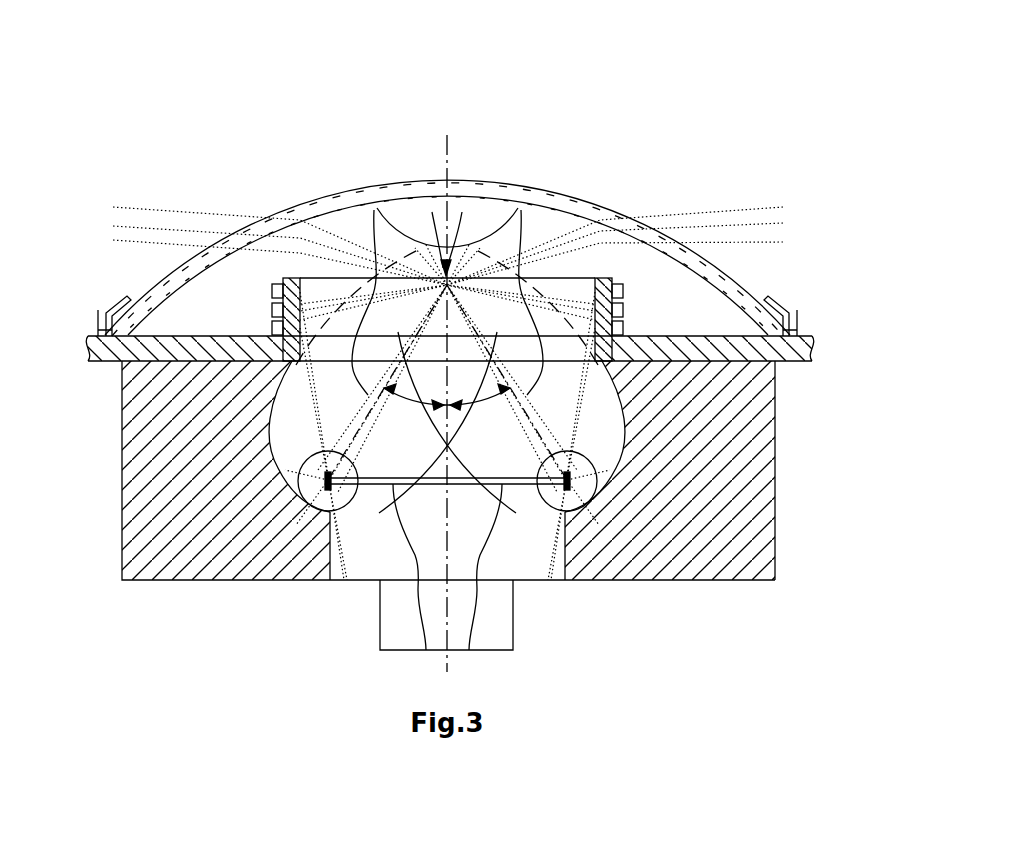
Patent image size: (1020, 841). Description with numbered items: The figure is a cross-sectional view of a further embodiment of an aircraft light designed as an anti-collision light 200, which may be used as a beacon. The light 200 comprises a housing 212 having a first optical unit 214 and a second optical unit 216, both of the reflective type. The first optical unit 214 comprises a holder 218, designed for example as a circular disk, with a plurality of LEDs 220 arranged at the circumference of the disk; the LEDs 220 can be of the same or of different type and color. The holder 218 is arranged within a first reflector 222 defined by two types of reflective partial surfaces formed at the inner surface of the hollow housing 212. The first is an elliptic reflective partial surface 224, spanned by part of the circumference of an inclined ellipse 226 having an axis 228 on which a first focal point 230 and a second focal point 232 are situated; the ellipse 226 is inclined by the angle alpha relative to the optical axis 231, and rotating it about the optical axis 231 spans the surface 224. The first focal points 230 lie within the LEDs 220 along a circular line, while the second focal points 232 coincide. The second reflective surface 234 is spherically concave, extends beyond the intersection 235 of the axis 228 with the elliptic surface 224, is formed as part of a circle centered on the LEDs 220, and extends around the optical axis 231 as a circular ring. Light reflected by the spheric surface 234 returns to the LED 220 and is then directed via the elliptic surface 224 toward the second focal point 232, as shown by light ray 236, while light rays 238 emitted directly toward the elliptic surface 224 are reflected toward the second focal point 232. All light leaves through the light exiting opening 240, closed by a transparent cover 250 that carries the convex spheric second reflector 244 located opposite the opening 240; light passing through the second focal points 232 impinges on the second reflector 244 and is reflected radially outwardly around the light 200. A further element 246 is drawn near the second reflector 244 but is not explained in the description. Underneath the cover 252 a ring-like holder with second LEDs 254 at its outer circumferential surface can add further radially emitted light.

The anti-collision light 200 is at (130, 152).
The housing 212 is at (160, 473).
The first optical unit 214 is at (660, 432).
The second optical unit 216 is at (279, 172).
The holder 218 is at (437, 588).
The LEDs 220 is at (318, 518).
The first reflector 222 is at (637, 388).
The elliptic reflective partial surface 224 is at (620, 440).
The ellipse 226 is at (548, 216).
The axis 228 is at (384, 392).
The first focal point 230 is at (300, 502).
The optical axis 231 is at (447, 150).
The second focal point 232 is at (462, 212).
The second reflective surface 234 is at (590, 540).
The intersection 235 is at (372, 550).
The light ray 236 is at (290, 270).
The light rays 238 is at (330, 335).
The light exiting opening 240 is at (603, 210).
The second reflector 244 is at (506, 208).
The lens element 246 is at (432, 212).
The transparent cover 250 is at (319, 198).
The cover 252 is at (236, 199).
The second LEDs 254 is at (272, 300).